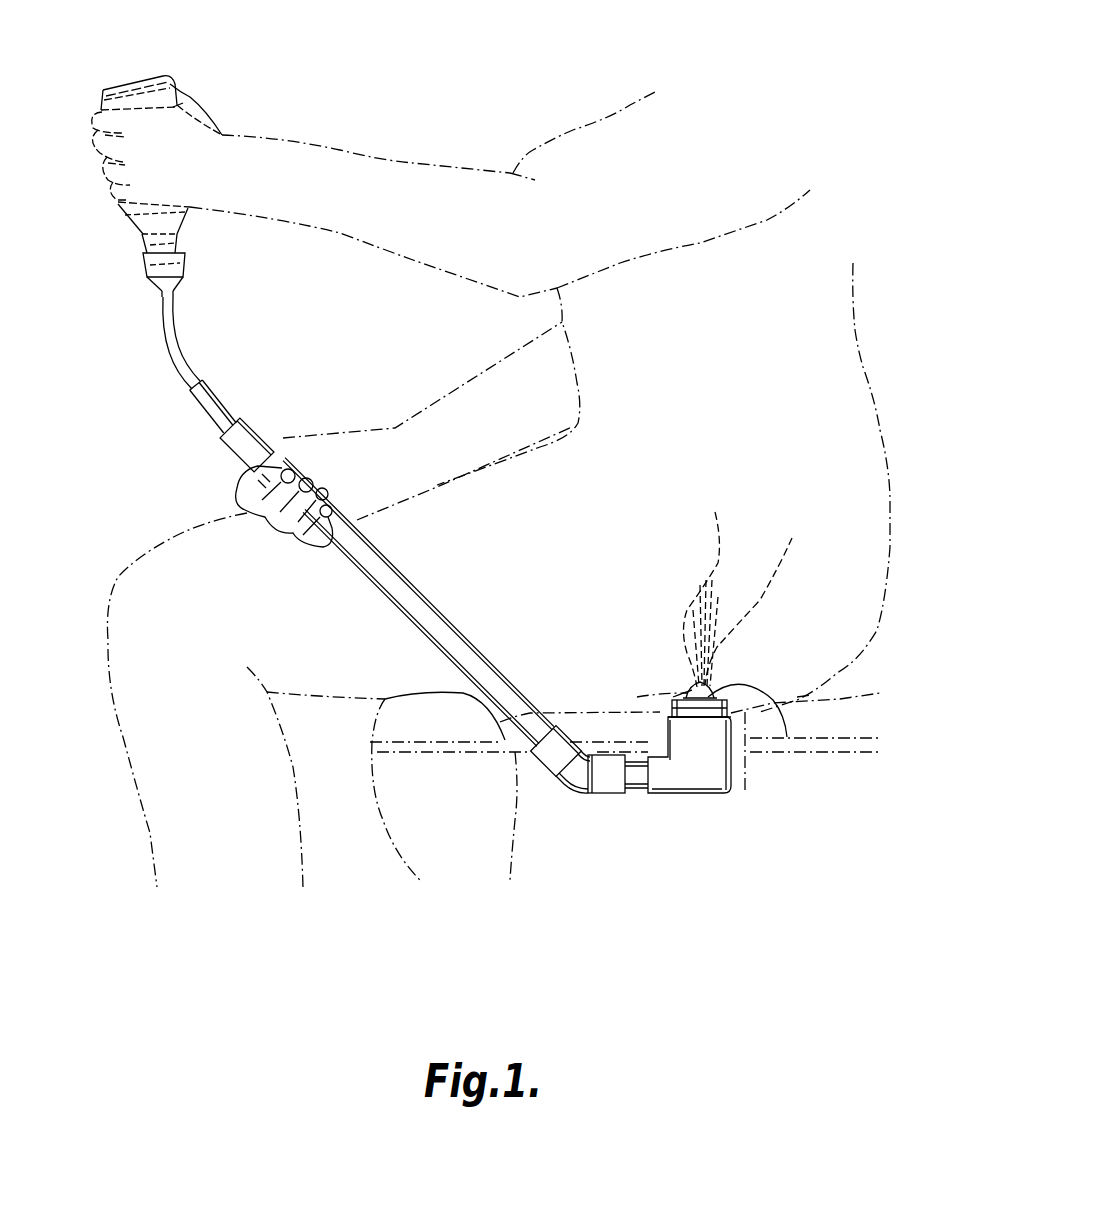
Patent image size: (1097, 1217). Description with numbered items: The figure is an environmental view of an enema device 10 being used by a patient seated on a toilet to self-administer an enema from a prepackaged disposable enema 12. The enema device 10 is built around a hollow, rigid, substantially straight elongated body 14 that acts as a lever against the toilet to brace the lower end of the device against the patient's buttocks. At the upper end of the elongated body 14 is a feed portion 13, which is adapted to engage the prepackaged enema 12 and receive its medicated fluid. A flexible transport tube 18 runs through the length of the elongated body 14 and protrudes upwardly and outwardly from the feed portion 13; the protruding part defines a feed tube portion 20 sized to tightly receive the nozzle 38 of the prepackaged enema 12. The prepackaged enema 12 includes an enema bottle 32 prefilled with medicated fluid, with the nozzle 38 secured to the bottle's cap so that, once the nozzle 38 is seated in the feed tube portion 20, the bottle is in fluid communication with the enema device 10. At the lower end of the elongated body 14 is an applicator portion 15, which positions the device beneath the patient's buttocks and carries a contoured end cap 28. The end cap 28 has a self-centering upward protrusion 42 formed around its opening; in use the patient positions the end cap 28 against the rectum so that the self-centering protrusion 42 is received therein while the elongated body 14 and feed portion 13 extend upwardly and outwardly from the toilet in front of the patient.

The enema device 10 is at (454, 576).
The prepackaged disposable enema 12 is at (112, 76).
The feed portion 13 is at (193, 402).
The elongated body 14 is at (473, 660).
The applicator portion 15 is at (671, 688).
The transport tube 18 is at (237, 417).
The feed tube portion 20 is at (198, 390).
The end cap 28 is at (722, 717).
The enema bottle 32 is at (118, 208).
The nozzle 38 is at (176, 300).
The self-centering upward protrusion 42 is at (707, 685).